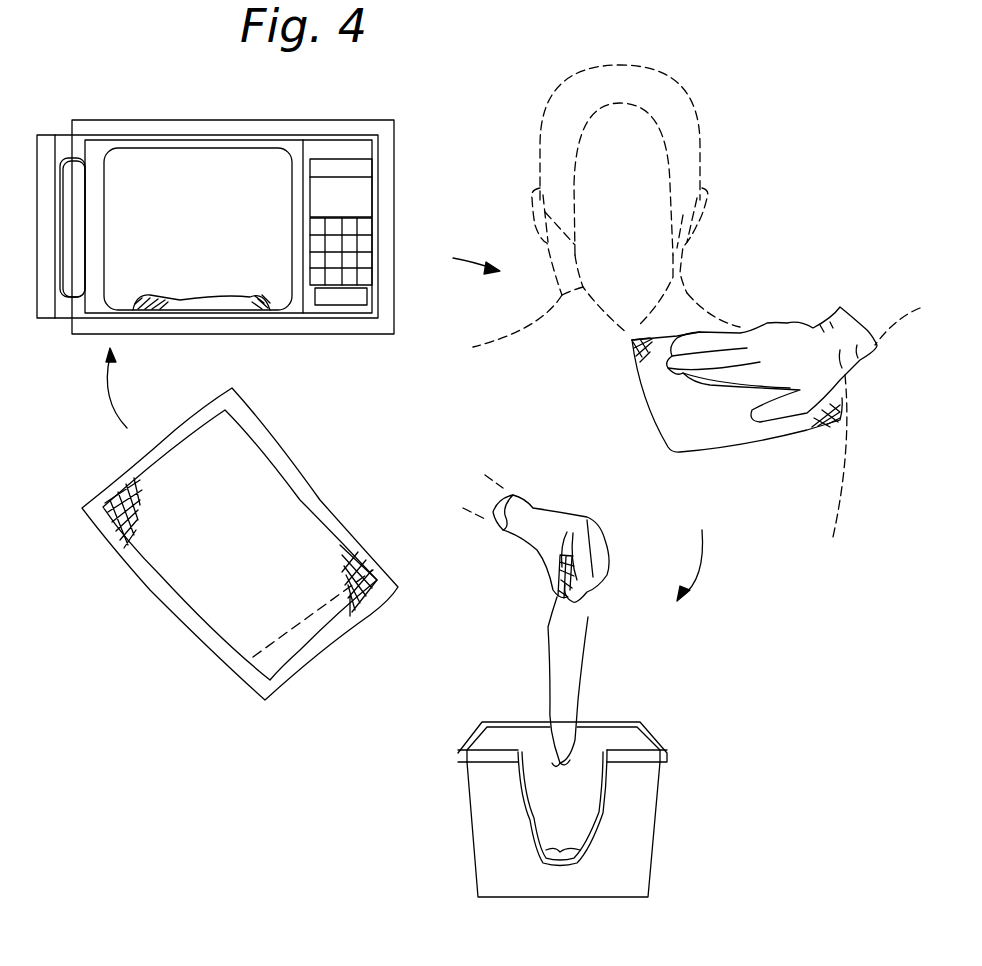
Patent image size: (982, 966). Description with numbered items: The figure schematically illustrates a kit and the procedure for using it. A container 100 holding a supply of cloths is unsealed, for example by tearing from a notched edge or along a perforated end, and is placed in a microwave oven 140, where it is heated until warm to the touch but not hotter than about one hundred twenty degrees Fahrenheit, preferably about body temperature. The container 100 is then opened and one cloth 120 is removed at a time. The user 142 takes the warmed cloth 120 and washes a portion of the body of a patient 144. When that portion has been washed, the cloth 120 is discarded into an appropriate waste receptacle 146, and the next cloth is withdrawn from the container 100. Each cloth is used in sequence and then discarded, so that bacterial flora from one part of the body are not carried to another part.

The container 100 is at (330, 510).
The cloth 120 is at (237, 290).
The microwave oven 140 is at (394, 168).
The user 142 is at (782, 335).
The patient 144 is at (800, 475).
The waste receptacle 146 is at (475, 773).